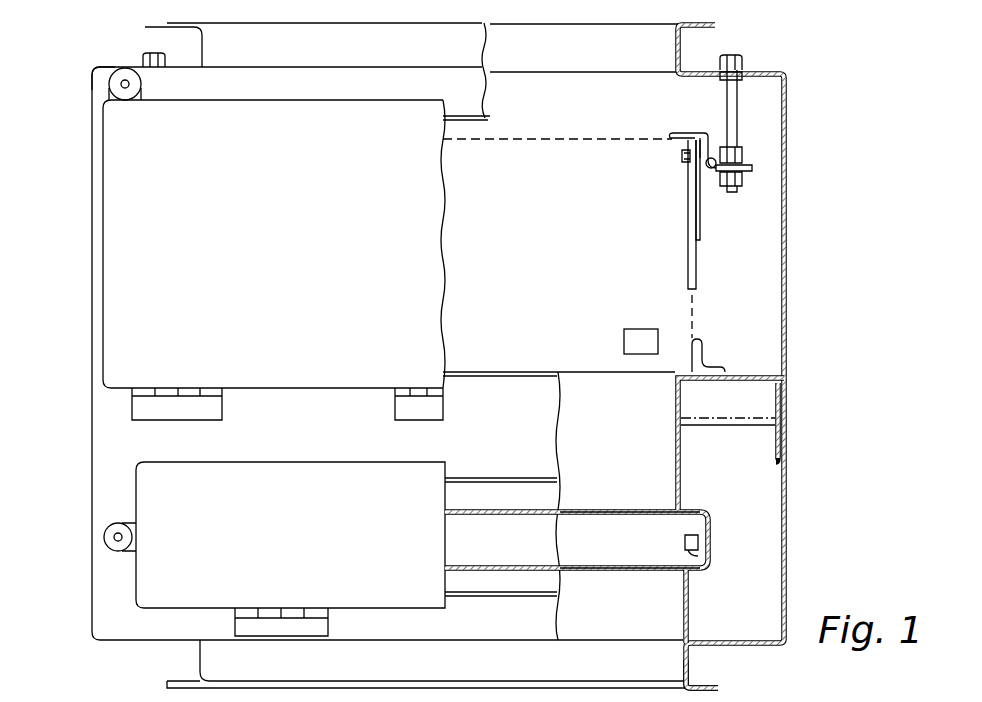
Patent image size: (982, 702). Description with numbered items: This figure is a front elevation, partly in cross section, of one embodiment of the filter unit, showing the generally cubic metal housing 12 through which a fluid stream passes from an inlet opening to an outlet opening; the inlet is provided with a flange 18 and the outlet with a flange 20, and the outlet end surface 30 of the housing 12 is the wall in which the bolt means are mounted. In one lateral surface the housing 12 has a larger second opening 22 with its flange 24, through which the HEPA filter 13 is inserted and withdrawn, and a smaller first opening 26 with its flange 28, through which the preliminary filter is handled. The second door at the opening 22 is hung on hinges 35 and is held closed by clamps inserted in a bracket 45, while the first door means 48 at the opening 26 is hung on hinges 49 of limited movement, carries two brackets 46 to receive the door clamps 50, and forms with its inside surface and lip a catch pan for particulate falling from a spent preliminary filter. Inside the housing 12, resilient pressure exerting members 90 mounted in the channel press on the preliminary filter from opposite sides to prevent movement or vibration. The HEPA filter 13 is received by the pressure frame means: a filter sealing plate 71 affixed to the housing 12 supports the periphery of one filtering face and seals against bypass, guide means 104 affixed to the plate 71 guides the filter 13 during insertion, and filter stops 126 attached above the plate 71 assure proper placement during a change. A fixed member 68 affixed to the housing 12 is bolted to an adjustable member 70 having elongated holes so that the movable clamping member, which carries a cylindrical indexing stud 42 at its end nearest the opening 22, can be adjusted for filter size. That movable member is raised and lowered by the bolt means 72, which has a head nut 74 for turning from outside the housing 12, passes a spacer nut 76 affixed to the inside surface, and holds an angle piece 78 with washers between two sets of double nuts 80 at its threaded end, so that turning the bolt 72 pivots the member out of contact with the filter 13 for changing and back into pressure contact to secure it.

The housing 12 is at (92, 352).
The HEPA filter 13 is at (558, 138).
The flange 18 is at (712, 688).
The flange 20 is at (150, 27).
The second opening 22 is at (578, 252).
The flange 24 is at (493, 378).
The first opening 26 is at (588, 551).
The flange 28 is at (598, 572).
The outlet end surface 30 is at (104, 66).
The hinges 35 is at (225, 410).
The cylindrical indexing stud 42 is at (706, 167).
The bracket 45 is at (142, 91).
The brackets 46 is at (120, 523).
The first door means 48 is at (347, 462).
The hinges 49 is at (330, 626).
The door clamps 50 is at (117, 552).
The fixed member 68 is at (688, 262).
The adjustable member 70 is at (700, 222).
The filter sealing plate 71 is at (756, 372).
The bolt means 72 is at (738, 120).
The head nut 74 is at (760, 42).
The spacer nut 76 is at (787, 78).
The angle piece 78 is at (712, 157).
The double nuts 80 is at (742, 152).
The resilient pressure exerting members 90 is at (700, 558).
The guide means 104 is at (718, 365).
The filter stops 126 is at (624, 345).